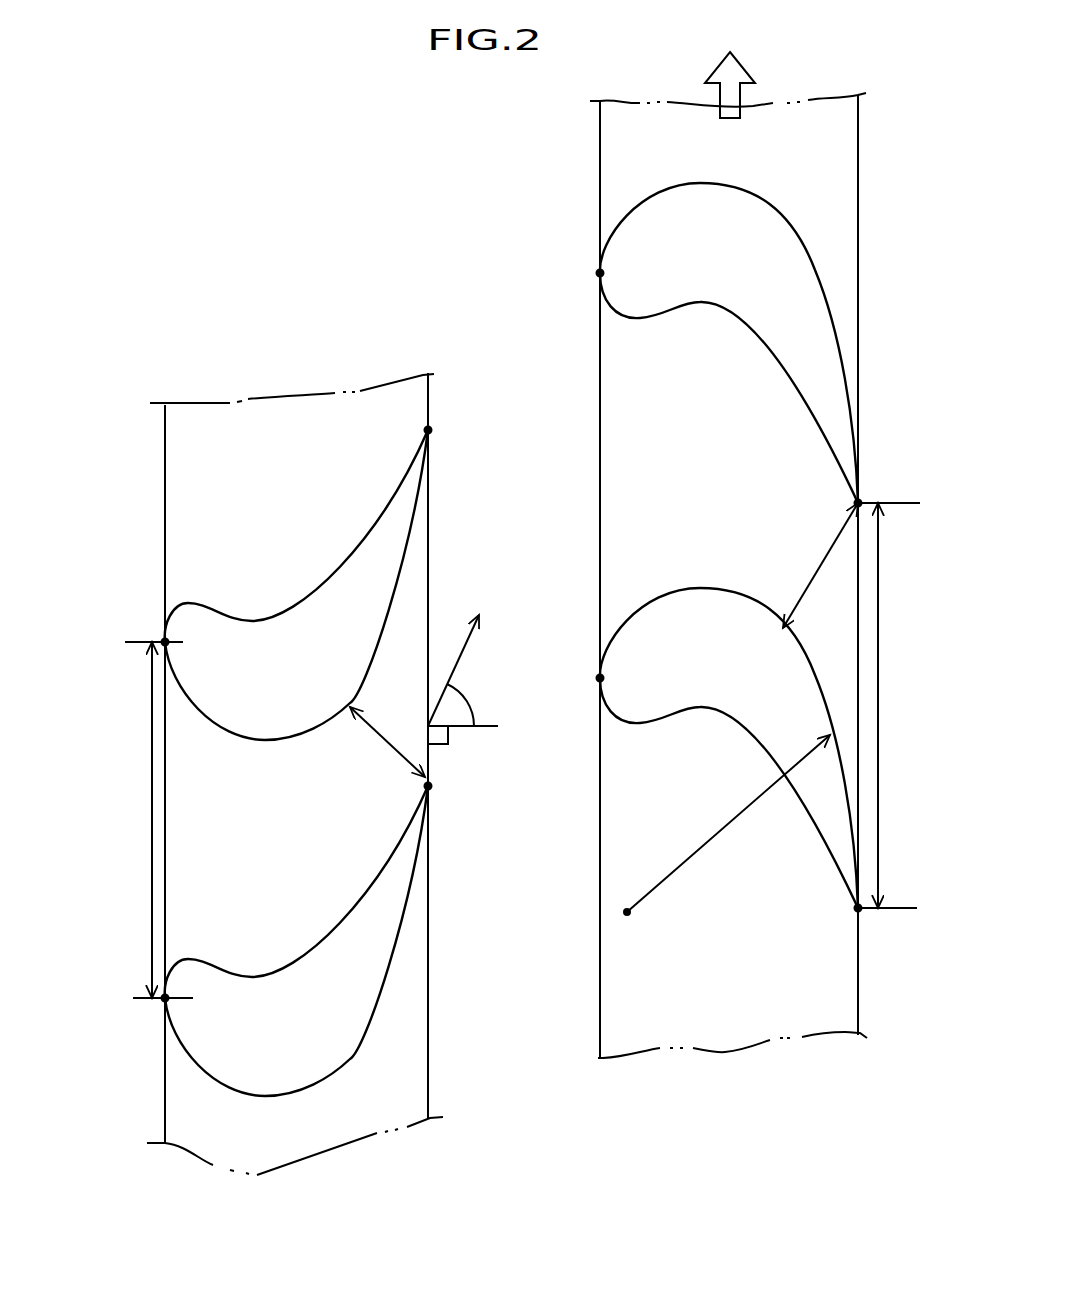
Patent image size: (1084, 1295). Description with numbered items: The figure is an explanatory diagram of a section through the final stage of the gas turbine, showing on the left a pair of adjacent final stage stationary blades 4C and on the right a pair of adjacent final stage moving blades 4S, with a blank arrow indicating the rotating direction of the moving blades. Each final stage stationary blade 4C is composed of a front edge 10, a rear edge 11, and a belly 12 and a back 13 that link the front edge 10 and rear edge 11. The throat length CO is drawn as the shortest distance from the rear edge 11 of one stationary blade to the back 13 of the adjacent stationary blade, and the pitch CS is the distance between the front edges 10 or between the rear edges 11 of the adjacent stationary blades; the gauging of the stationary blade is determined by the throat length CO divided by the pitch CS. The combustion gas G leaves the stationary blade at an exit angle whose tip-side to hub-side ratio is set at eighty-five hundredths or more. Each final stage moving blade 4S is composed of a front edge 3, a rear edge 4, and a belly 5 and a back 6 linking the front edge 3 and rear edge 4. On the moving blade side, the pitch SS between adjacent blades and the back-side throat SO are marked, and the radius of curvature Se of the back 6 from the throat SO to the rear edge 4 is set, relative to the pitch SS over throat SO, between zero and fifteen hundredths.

The front edge 3 is at (597, 274).
The rear edge 4 is at (860, 500).
The belly 5 is at (727, 313).
The back 6 is at (788, 228).
The final stage moving blade 4S is at (729, 523).
The final stage stationary blade 4C is at (296, 770).
The front edge 10 is at (165, 641).
The rear edge 11 is at (428, 430).
The belly 12 is at (296, 608).
The back 13 is at (312, 735).
The pitch CS is at (129, 820).
The pitch SS is at (898, 705).
The throat SO is at (835, 537).
The radius of curvature Se is at (727, 825).
The throat length CO is at (387, 729).
The combustion gas G is at (465, 657).